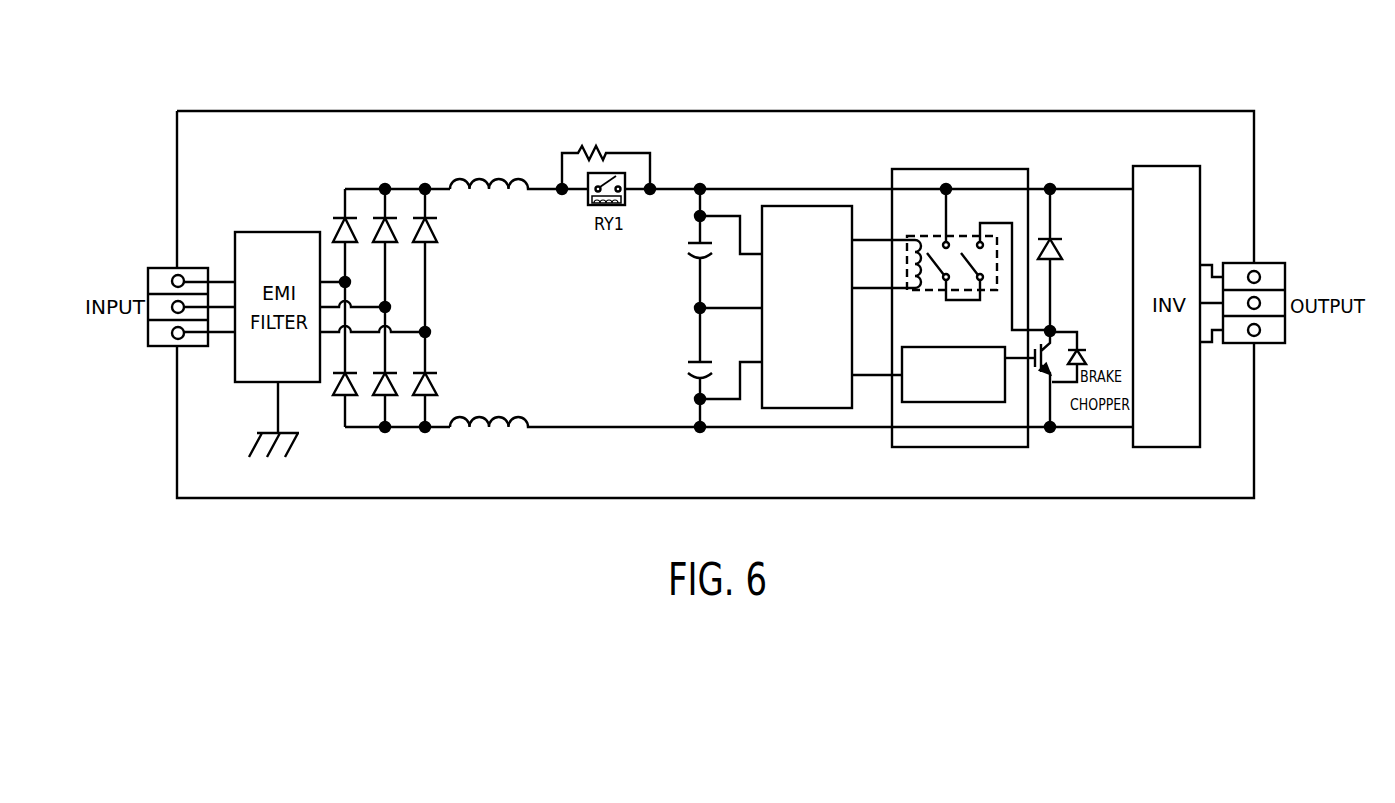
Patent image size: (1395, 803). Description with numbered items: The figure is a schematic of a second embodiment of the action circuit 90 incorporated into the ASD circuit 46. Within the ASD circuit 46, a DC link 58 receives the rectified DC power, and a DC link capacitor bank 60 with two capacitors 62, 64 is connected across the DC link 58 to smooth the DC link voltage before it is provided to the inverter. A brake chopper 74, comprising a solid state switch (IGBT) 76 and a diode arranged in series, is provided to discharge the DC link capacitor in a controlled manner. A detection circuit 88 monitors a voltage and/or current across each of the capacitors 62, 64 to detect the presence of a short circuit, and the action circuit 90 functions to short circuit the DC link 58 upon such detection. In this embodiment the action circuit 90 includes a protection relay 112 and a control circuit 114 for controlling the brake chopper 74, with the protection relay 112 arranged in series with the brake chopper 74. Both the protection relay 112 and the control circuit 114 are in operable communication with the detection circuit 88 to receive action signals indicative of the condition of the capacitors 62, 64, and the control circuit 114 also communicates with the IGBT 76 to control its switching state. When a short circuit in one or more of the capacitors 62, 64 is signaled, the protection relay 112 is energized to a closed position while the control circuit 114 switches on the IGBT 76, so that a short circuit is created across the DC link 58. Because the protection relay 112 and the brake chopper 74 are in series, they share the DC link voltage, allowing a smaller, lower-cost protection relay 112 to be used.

The ASD circuit 46 is at (745, 83).
The DC link 58 is at (580, 428).
The DC link capacitor bank 60 is at (671, 308).
The capacitor 62 is at (690, 247).
The capacitor 64 is at (688, 368).
The brake chopper 74 is at (1076, 318).
The solid state switch (IGBT) 76 is at (1043, 372).
The detection circuit 88 is at (810, 196).
The action circuit 90 is at (993, 277).
The protection relay 112 is at (968, 222).
The control circuit 114 is at (952, 404).